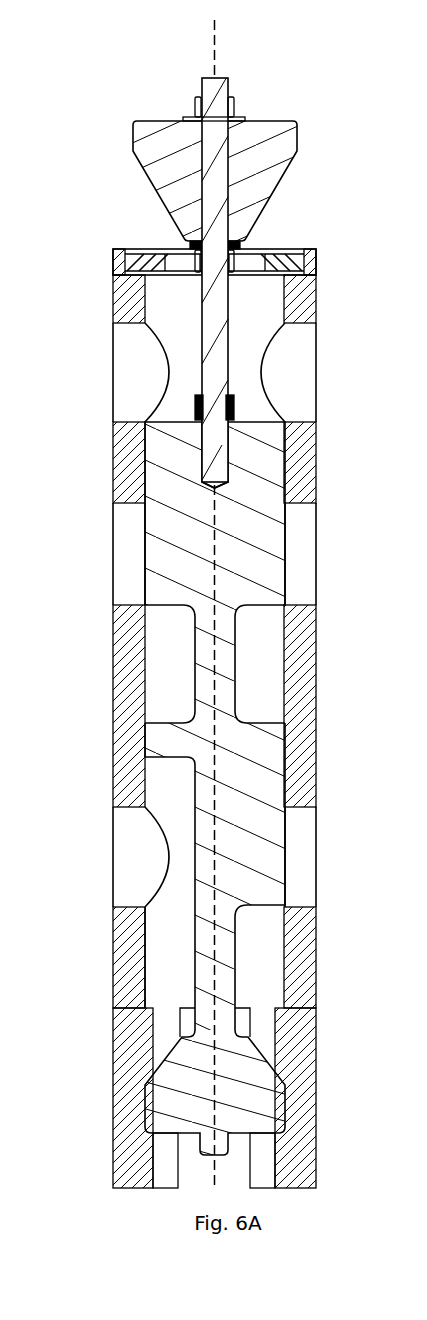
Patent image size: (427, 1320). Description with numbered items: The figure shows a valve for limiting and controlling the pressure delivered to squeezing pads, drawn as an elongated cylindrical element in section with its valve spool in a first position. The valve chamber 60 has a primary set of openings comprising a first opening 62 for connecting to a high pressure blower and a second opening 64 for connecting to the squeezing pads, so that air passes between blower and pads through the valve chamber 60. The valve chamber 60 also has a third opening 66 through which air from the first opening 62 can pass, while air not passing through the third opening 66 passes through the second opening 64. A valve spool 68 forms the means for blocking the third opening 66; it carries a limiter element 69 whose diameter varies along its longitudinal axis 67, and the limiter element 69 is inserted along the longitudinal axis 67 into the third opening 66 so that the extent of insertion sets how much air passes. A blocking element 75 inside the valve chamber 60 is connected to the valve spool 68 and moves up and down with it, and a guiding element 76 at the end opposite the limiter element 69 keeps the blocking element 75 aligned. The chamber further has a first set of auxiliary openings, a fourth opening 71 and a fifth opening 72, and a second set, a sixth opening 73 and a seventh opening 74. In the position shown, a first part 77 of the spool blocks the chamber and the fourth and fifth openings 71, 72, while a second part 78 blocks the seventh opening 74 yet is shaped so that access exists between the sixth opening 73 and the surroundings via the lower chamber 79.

The valve chamber 60 is at (247, 348).
The first opening 62 is at (137, 377).
The second opening 64 is at (297, 397).
The third opening 66 is at (173, 270).
The longitudinal axis 67 is at (210, 43).
The valve spool 68 is at (215, 92).
The limiter element 69 is at (257, 207).
The fourth opening 71 is at (122, 557).
The fifth opening 72 is at (307, 557).
The sixth opening 73 is at (133, 850).
The seventh opening 74 is at (307, 857).
The blocking element 75 is at (237, 670).
The guiding element 76 is at (262, 1110).
The first part of the valve spool 77 is at (187, 535).
The second part of the valve spool 78 is at (220, 790).
The chamber 79 is at (177, 948).